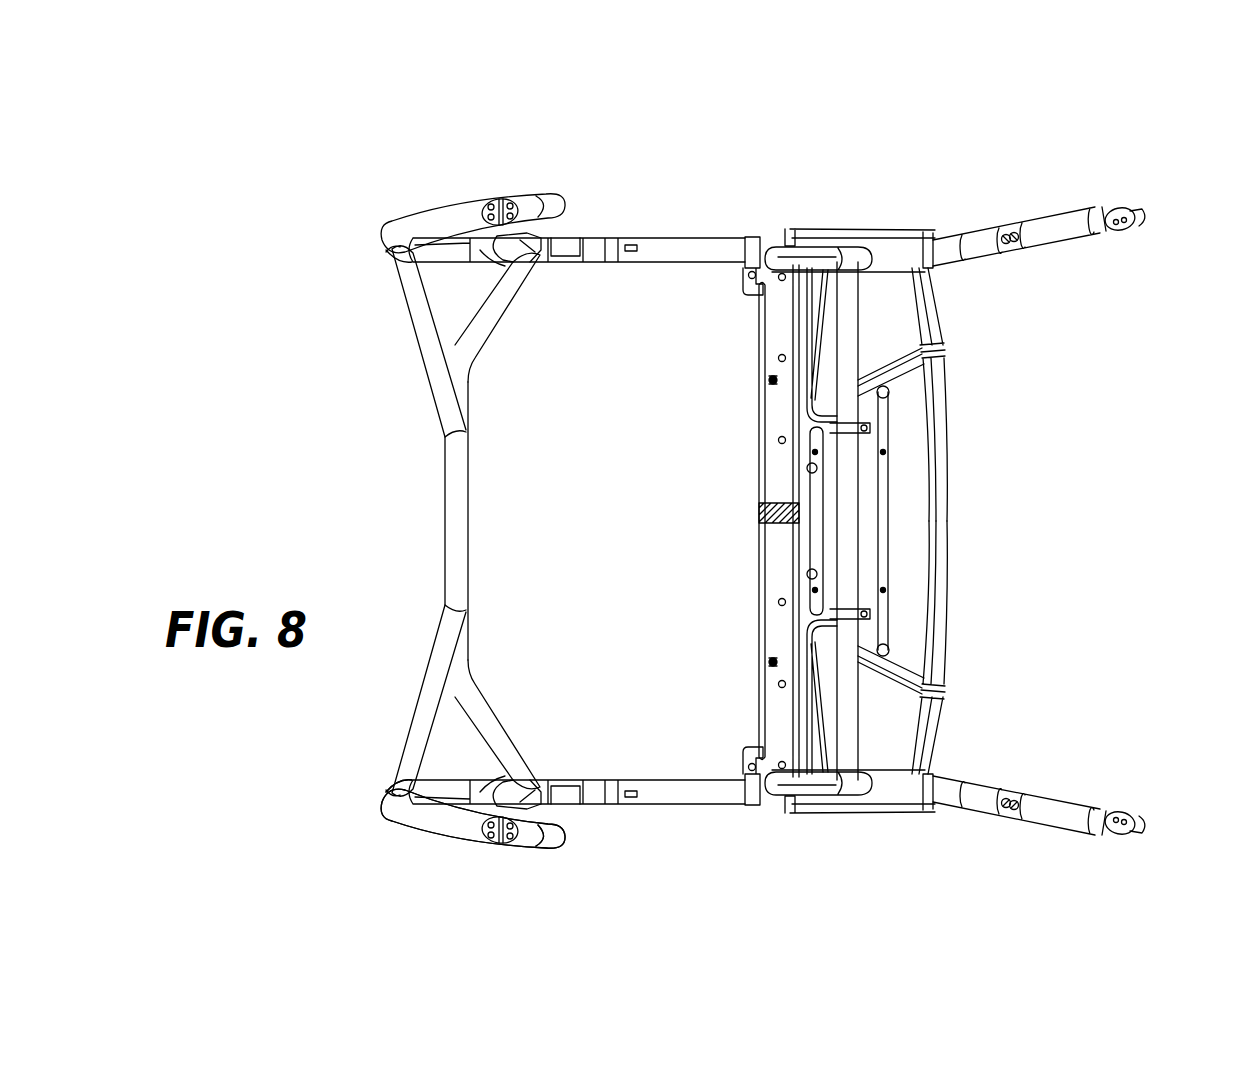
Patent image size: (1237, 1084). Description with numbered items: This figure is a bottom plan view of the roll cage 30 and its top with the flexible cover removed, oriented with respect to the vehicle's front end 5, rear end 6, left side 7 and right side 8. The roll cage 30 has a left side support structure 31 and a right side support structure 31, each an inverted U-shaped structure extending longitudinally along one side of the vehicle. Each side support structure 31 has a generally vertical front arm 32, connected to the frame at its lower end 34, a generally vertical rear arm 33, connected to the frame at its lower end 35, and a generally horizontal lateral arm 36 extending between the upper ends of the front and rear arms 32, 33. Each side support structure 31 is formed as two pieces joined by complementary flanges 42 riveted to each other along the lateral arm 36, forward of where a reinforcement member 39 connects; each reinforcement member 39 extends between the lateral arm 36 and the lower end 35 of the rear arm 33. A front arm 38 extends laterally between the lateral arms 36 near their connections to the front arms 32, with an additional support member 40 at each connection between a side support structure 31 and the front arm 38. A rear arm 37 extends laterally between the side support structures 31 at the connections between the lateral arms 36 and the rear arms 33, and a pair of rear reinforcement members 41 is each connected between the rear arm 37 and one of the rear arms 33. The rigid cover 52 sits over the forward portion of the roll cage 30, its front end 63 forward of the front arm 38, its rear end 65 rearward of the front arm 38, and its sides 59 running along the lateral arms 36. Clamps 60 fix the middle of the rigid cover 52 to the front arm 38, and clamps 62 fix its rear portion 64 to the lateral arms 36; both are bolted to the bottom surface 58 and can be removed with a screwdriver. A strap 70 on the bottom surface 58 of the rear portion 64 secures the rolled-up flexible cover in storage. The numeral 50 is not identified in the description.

The front end 5 is at (1113, 348).
The rear end 6 is at (278, 506).
The left side 7 is at (521, 867).
The right side 8 is at (485, 154).
The roll cage 30 is at (657, 166).
The side support structure 31 is at (705, 219).
The front arm (front left/right arm) 32 is at (1030, 235).
The rear arm (rear left/right arm) 33 is at (400, 228).
The lower end 34 is at (1128, 205).
The lower end 35 is at (498, 205).
The lateral arm 36 is at (653, 250).
The rear arm 37 is at (480, 333).
The front arm 38 is at (850, 563).
The reinforcement member 39 is at (514, 263).
The support member 40 is at (885, 258).
The rear reinforcement member 41 is at (430, 340).
The complementary flanges 42 is at (568, 263).
The center frame assembly 50 is at (996, 452).
The rigid cover 52 is at (905, 437).
The bottom surface 58 is at (905, 710).
The sides 59 is at (820, 240).
The clamps 60 is at (826, 427).
The clamps 62 is at (746, 274).
The front end 63 is at (946, 540).
The rear portion 64 is at (780, 216).
The rear end 65 is at (759, 422).
The strap 70 is at (759, 515).